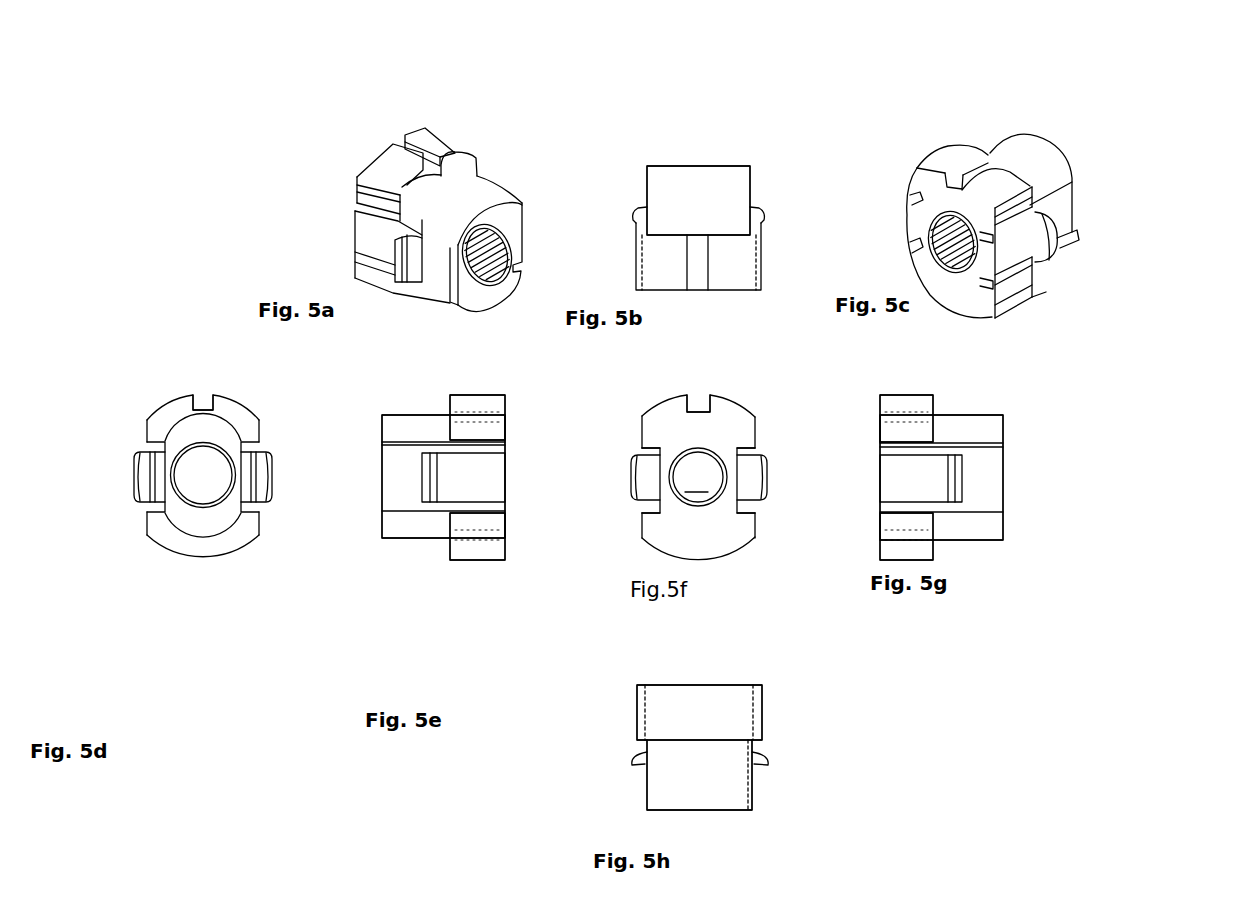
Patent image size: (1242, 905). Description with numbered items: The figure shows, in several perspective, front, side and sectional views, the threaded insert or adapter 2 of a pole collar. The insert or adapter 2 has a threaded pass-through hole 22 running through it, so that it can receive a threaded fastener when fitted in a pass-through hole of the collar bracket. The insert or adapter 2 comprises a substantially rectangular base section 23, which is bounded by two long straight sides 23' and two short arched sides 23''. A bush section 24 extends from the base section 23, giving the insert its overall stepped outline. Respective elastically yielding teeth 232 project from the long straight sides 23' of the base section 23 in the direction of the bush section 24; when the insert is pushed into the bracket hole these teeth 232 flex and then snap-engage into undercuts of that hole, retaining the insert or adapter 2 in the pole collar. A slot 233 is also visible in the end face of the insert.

In FIG. 5A, the insert or adapter 2 is at (456, 136).
In FIG. 5B, the insert or adapter 2 is at (708, 164).
In FIG. 5C, the insert or adapter 2 is at (1058, 143).
In FIG. 5D, the insert or adapter 2 is at (150, 545).
In FIG. 5E, the insert or adapter 2 is at (467, 566).
In FIG. 5F, the insert or adapter 2 is at (731, 557).
In FIG. 5G, the insert or adapter 2 is at (1003, 547).
In FIG. 5H, the insert or adapter 2 is at (748, 812).
In FIG. 5A, the threaded pass-through hole 22 is at (507, 237).
In FIG. 5C, the threaded pass-through hole 22 is at (945, 160).
In FIG. 5D, the threaded pass-through hole 22 is at (187, 500).
In FIG. 5F, the threaded pass-through hole 22 is at (680, 488).
In FIG. 5A, the base section 23 is at (365, 180).
In FIG. 5B, the base section 23 is at (732, 247).
In FIG. 5C, the base section 23 is at (883, 231).
In FIG. 5E, the base section 23 is at (503, 512).
In FIG. 5F, the base section 23 is at (670, 461).
In FIG. 5G, the base section 23 is at (883, 466).
In FIG. 5H, the base section 23 is at (768, 725).
In FIG. 5C, the long straight sides 23' is at (976, 214).
In FIG. 5C, the short arched sides 23'' is at (996, 333).
In FIG. 5A, the elastically yielding teeth 232 is at (408, 258).
In FIG. 5B, the elastically yielding teeth 232 is at (760, 207).
In FIG. 5C, the elastically yielding teeth 232 is at (1030, 252).
In FIG. 5D, the elastically yielding teeth 232 is at (137, 462).
In FIG. 5E, the elastically yielding teeth 232 is at (430, 488).
In FIG. 5F, the elastically yielding teeth 232 is at (632, 483).
In FIG. 5G, the elastically yielding teeth 232 is at (902, 488).
In FIG. 5H, the elastically yielding teeth 232 is at (632, 745).
In FIG. 5A, the slot 233 is at (407, 140).
In FIG. 5C, the slot 233 is at (952, 176).
In FIG. 5D, the slot 233 is at (202, 403).
In FIG. 5F, the slot 233 is at (698, 405).
In FIG. 5B, the bush section 24 is at (727, 187).
In FIG. 5C, the bush section 24 is at (1070, 183).
In FIG. 5E, the bush section 24 is at (403, 427).
In FIG. 5G, the bush section 24 is at (968, 537).
In FIG. 5H, the bush section 24 is at (677, 792).